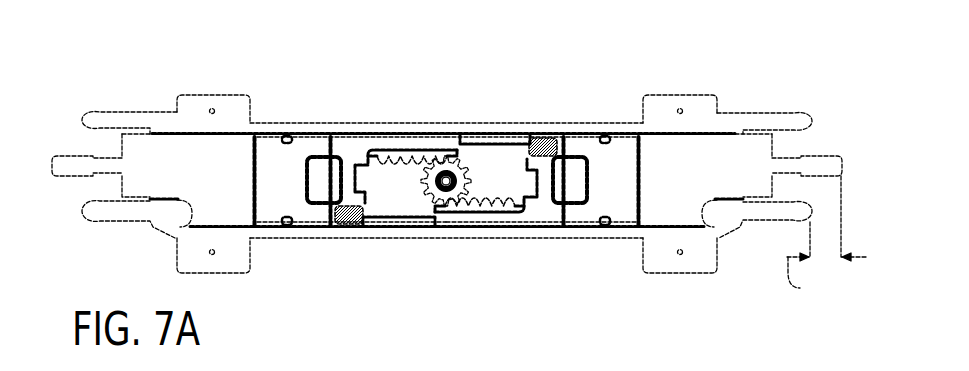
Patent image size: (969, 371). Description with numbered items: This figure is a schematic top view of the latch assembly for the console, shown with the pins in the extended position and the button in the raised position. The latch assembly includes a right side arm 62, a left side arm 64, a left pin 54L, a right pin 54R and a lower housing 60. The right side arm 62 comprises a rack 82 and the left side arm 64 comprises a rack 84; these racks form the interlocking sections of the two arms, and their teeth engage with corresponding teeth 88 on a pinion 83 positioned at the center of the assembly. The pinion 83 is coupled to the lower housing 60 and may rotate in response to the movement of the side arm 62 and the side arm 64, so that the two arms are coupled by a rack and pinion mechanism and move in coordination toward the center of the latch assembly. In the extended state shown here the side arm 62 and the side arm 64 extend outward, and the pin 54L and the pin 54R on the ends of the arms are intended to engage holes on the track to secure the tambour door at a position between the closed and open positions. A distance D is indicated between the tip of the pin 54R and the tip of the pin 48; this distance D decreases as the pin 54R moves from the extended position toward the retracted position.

The pin 48 is at (800, 112).
The left pin 54L is at (72, 160).
The right pin 54R is at (823, 160).
The lower housing 60 is at (183, 108).
The right side arm 62 is at (655, 147).
The left side arm 64 is at (228, 148).
The rack 82 is at (490, 208).
The pinion 83 is at (433, 190).
The rack 84 is at (424, 153).
The teeth 88 is at (457, 165).
The distance D is at (825, 240).